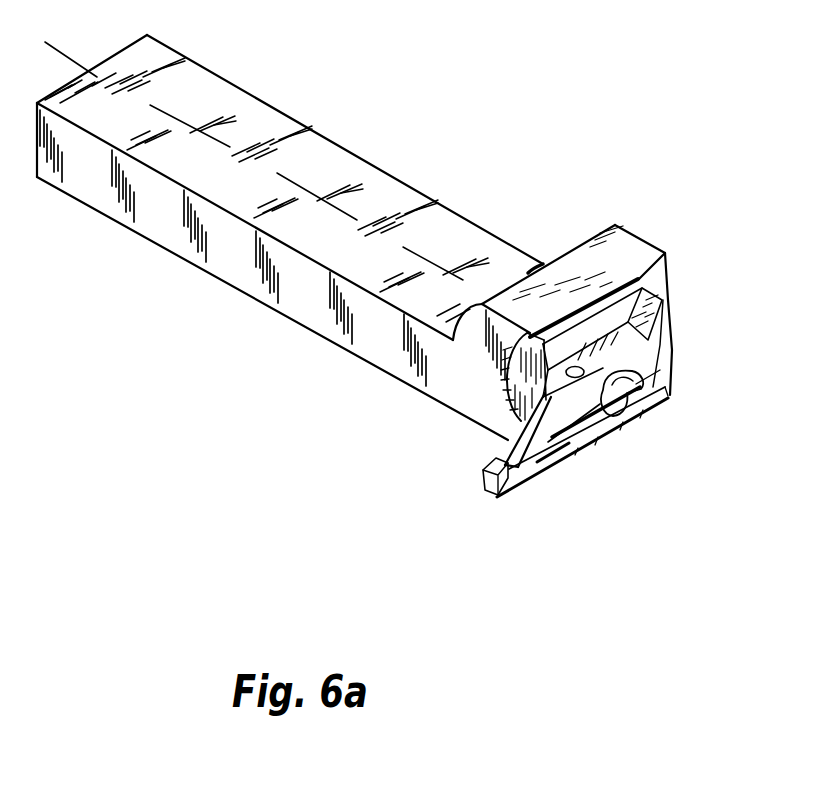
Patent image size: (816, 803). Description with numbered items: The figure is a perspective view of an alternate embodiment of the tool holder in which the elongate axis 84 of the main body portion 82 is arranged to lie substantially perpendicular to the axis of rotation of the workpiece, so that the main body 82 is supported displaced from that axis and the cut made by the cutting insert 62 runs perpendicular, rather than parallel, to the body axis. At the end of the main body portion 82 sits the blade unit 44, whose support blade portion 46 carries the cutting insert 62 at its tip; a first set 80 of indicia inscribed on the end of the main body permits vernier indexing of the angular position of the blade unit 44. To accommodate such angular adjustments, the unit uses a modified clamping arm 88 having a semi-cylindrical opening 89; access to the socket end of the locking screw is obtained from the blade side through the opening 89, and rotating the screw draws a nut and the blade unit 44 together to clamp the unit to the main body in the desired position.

The blade unit 44 is at (672, 437).
The support blade portion 46 is at (575, 464).
The cutting insert 62 is at (490, 468).
The first set of indicia 80 is at (499, 392).
The main body portion 82 is at (330, 141).
The elongate axis 84 is at (52, 44).
The clamping arm 88 is at (640, 358).
The opening 89 is at (629, 404).